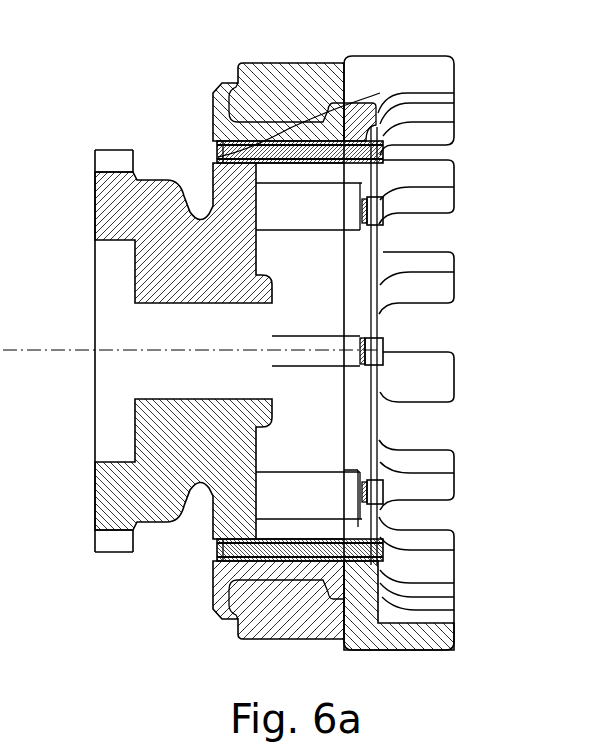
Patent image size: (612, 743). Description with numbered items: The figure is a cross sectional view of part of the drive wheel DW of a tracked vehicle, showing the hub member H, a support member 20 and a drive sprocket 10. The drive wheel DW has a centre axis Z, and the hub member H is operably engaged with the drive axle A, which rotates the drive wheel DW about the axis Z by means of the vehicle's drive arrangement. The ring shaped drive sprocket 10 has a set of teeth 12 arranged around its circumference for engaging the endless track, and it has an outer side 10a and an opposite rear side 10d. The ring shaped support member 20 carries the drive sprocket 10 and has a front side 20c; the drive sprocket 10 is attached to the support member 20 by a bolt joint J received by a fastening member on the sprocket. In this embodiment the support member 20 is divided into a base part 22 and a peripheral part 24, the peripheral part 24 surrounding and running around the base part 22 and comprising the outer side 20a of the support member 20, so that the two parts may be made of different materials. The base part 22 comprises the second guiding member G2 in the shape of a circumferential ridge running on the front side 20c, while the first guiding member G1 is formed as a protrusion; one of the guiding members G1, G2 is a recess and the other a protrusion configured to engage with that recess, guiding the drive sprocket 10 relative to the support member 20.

The drive wheel DW is at (146, 54).
The drive axle A is at (207, 406).
The hub member H is at (110, 563).
The centre axis Z is at (123, 350).
The base part 22 is at (211, 107).
The outer side 20a is at (262, 62).
The peripheral part 24 is at (320, 57).
The second guiding member G2 is at (217, 157).
The first guiding member G1 is at (349, 579).
The rear side 10d is at (340, 454).
The drive sprocket 10 is at (425, 56).
The outer side 10a is at (393, 63).
The teeth 12 is at (456, 186).
The front side 20c is at (383, 427).
The support member 20 is at (254, 642).
The bolt joint J is at (389, 546).